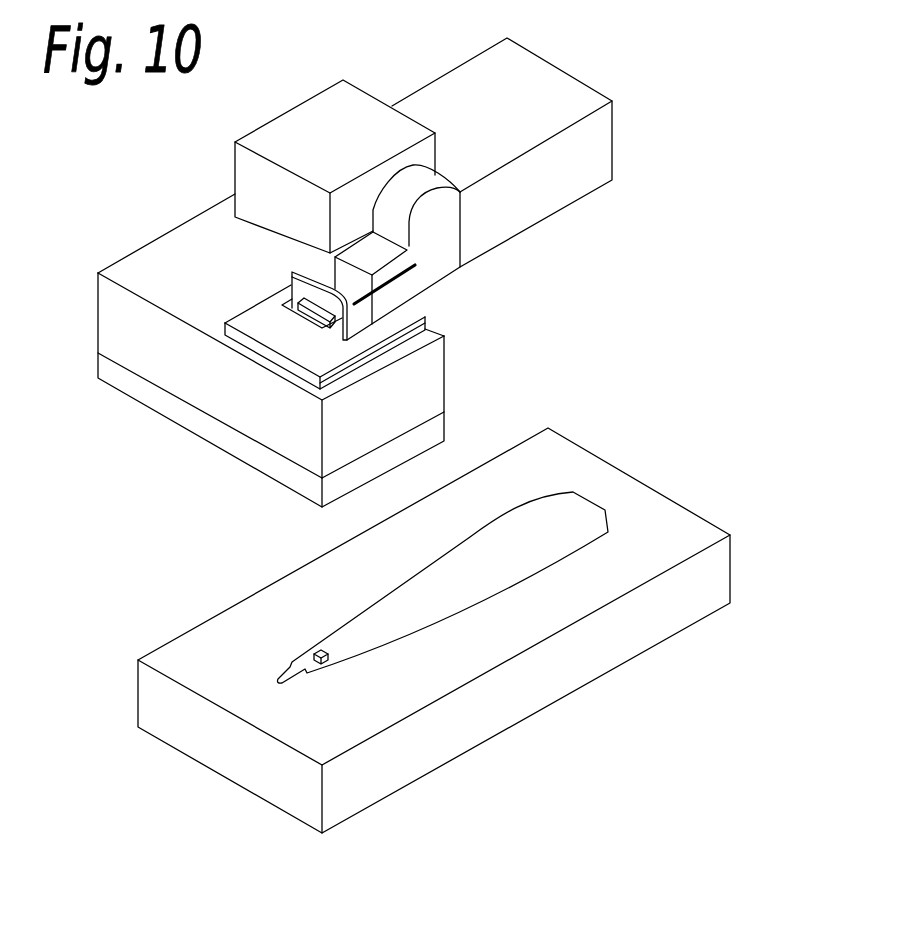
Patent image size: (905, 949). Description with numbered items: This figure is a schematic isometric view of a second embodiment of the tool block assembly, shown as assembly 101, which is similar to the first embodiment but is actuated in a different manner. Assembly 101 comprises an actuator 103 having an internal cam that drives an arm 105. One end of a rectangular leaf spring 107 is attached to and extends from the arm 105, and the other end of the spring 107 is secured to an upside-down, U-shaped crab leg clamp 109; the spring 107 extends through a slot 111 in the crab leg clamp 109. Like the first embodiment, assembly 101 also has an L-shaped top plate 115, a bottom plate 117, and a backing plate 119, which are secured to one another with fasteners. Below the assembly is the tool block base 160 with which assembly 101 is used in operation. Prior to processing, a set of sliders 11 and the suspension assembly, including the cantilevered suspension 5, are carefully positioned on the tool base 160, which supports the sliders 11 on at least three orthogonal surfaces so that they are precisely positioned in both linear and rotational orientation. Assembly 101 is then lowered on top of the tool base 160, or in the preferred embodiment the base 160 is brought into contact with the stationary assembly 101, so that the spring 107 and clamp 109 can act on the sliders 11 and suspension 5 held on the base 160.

The tool block assembly 101 is at (792, 265).
The actuator 103 is at (332, 124).
The arm 105 is at (442, 222).
The rectangular leaf spring 107 is at (348, 289).
The crab leg clamp 109 is at (296, 272).
The slot 111 is at (306, 298).
The top plate 115 is at (192, 372).
The bottom plate 117 is at (240, 447).
The backing plate 119 is at (406, 315).
The cantilevered suspension 5 is at (547, 520).
The slider 11 is at (329, 652).
The tool block base 160 is at (644, 527).